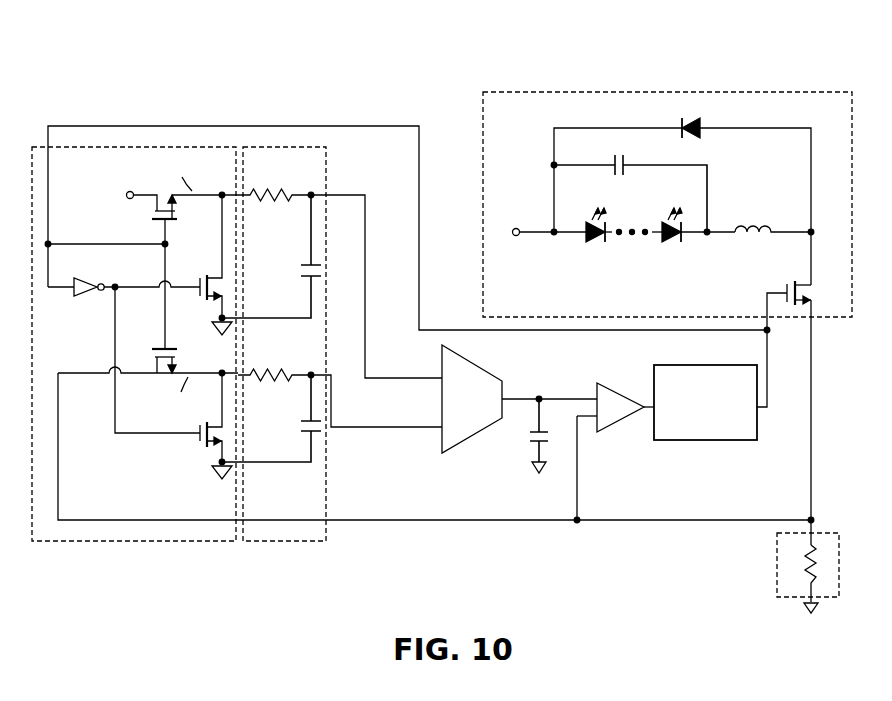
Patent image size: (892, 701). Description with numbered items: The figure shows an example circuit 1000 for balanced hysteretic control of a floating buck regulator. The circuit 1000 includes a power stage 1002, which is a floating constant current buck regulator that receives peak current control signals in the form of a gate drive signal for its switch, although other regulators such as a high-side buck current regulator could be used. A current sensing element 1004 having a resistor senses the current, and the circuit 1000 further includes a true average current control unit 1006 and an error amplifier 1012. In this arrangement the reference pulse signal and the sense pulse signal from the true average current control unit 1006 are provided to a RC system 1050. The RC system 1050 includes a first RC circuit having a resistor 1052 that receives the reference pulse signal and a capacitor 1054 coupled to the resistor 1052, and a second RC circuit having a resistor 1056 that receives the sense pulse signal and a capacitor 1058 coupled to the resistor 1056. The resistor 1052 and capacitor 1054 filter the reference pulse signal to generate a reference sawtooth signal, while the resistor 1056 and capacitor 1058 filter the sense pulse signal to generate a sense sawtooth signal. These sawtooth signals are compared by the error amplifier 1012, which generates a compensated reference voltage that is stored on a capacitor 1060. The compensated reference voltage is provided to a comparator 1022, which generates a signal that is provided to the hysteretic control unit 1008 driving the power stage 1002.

The circuit 1000 is at (131, 82).
The power stage 1002 is at (755, 90).
The current sensing element 1004 is at (788, 598).
The true average current control unit 1006 is at (130, 543).
The hysteretic control unit 1008 is at (714, 441).
The error amplifier 1012 is at (442, 361).
The comparator 1022 is at (612, 431).
The RC system 1050 is at (276, 543).
The resistor 1052 is at (265, 190).
The capacitor 1054 is at (310, 262).
The resistor 1056 is at (265, 370).
The capacitor 1058 is at (308, 437).
The capacitor 1060 is at (536, 447).